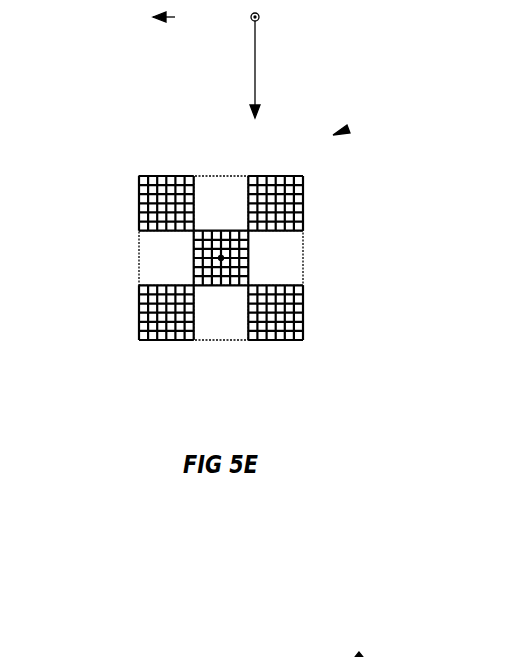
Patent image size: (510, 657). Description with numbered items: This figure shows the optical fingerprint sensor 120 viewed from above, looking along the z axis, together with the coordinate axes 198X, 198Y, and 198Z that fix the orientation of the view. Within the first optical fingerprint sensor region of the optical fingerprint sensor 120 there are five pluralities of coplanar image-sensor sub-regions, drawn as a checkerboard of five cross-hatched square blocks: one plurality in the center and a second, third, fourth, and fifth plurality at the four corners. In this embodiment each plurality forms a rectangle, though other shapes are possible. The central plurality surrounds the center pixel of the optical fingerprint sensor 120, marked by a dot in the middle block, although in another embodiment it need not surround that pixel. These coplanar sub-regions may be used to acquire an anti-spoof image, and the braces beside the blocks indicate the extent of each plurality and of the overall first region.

The coordinate axis 198X is at (250, 17).
The coordinate axis 198Y is at (255, 65).
The coordinate axis 198Z is at (251, 23).
The optical fingerprint sensor 120 is at (333, 135).